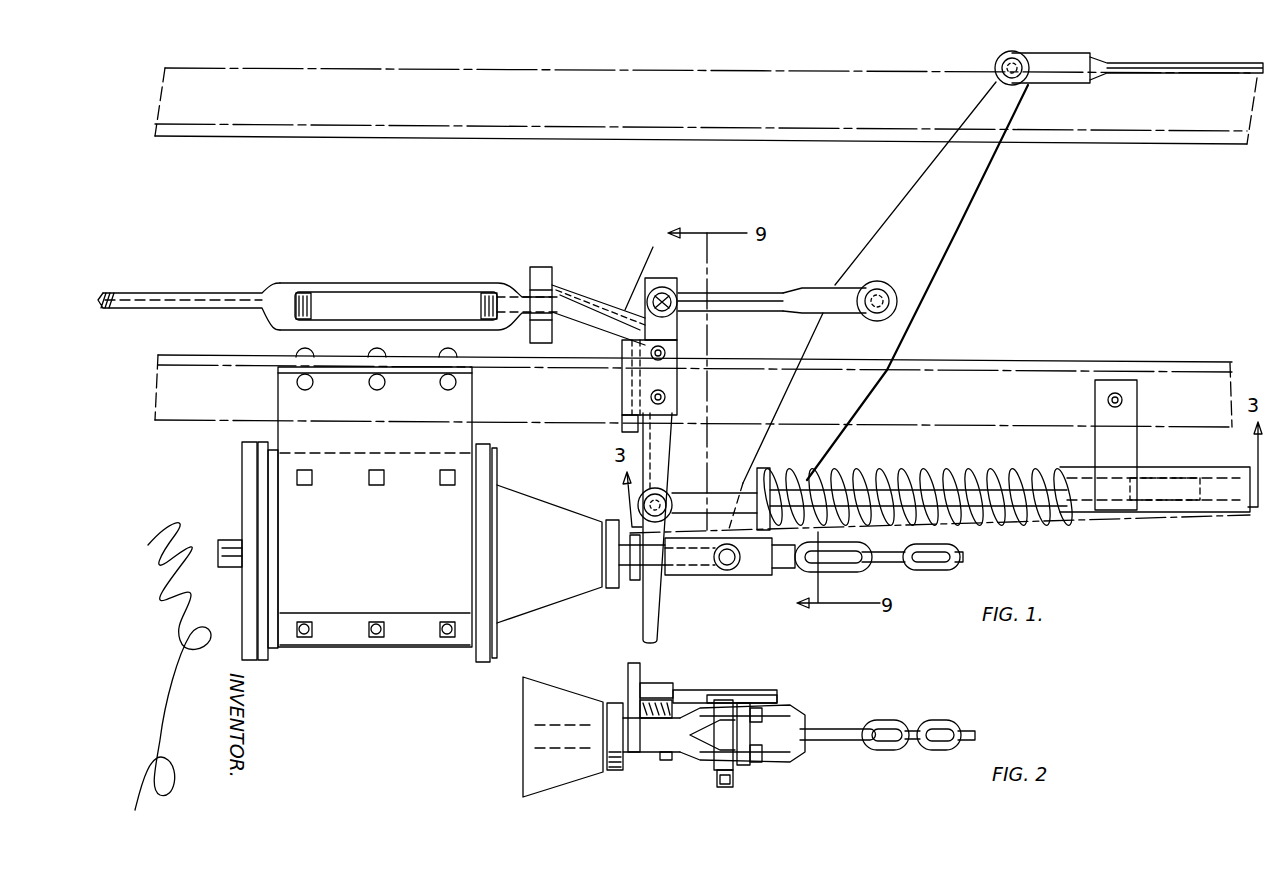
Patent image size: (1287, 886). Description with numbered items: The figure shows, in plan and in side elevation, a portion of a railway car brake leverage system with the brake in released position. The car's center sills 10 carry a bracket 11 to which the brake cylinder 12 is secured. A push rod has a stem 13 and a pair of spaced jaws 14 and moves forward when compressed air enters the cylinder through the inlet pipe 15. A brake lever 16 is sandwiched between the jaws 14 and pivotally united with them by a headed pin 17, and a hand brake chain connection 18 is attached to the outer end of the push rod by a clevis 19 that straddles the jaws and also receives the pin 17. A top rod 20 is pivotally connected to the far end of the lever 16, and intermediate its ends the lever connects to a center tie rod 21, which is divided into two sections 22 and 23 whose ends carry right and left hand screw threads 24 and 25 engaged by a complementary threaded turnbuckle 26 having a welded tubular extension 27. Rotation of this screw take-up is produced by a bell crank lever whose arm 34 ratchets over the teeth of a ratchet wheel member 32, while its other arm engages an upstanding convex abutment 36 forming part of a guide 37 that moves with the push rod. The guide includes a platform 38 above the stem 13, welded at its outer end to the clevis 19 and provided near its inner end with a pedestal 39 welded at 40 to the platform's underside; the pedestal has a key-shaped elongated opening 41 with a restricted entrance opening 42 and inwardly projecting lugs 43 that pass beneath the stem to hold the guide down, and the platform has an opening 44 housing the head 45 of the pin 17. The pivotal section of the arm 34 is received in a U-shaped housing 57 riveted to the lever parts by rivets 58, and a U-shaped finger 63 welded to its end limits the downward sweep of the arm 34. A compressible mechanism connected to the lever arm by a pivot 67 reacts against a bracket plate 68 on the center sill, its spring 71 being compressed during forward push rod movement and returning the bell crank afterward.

In FIG. 1, the center sills 10 is at (405, 130).
In FIG. 1, the bracket 11 is at (475, 437).
In FIG. 1, the brake cylinder 12 is at (495, 622).
In FIG. 2, the brake cylinder 12 is at (542, 782).
In FIG. 1, the stem 13 is at (581, 554).
In FIG. 2, the stem 13 is at (560, 755).
In FIG. 2, the spaced jaws 14 is at (743, 712).
In FIG. 1, the inlet pipe 15 is at (218, 542).
In FIG. 1, the brake lever 16 is at (948, 213).
In FIG. 2, the brake lever 16 is at (767, 735).
In FIG. 2, the headed pin 17 is at (717, 733).
In FIG. 1, the hand brake chain connection 18 is at (840, 570).
In FIG. 2, the hand brake chain connection 18 is at (948, 718).
In FIG. 1, the clevis 19 is at (782, 557).
In FIG. 2, the clevis 19 is at (757, 765).
In FIG. 1, the top rod 20 is at (1117, 73).
In FIG. 1, the center tie rod 21 is at (802, 287).
In FIG. 1, the tie rod section 22 is at (757, 312).
In FIG. 1, the tie rod section 23 is at (100, 293).
In FIG. 1, the right hand screw thread 24 is at (490, 317).
In FIG. 1, the left hand screw thread 25 is at (305, 305).
In FIG. 1, the turnbuckle 26 is at (410, 287).
In FIG. 1, the tubular extension 27 is at (203, 288).
In FIG. 1, the ratchet wheel member 32 is at (545, 265).
In FIG. 1, the bell crank arm 34 is at (560, 283).
In FIG. 1, the abutment 36 is at (630, 560).
In FIG. 2, the abutment 36 is at (642, 665).
In FIG. 1, the guide 37 is at (762, 570).
In FIG. 2, the guide 37 is at (775, 698).
In FIG. 1, the platform 38 is at (757, 577).
In FIG. 2, the platform 38 is at (753, 695).
In FIG. 1, the pedestal 39 is at (667, 580).
In FIG. 2, the pedestal 39 is at (642, 717).
In FIG. 2, the weld 40 is at (680, 700).
In FIG. 2, the elongated opening 41 is at (625, 752).
In FIG. 2, the entrance opening 42 is at (657, 752).
In FIG. 2, the inwardly projecting lugs 43 is at (660, 747).
In FIG. 1, the opening 44 is at (733, 577).
In FIG. 2, the head 45 is at (723, 695).
In FIG. 1, the U-shaped housing 57 is at (623, 393).
In FIG. 1, the rivets 58 is at (667, 357).
In FIG. 1, the U-shaped finger 63 is at (622, 423).
In FIG. 1, the pivot 67 is at (668, 492).
In FIG. 1, the bracket plate 68 is at (1127, 443).
In FIG. 1, the spring 71 is at (903, 472).